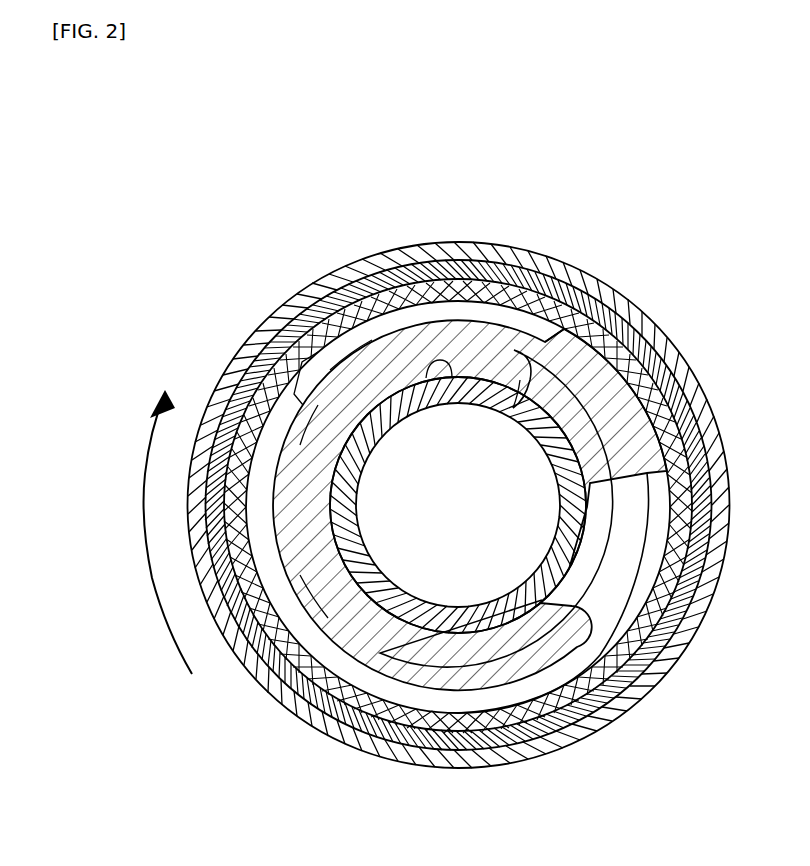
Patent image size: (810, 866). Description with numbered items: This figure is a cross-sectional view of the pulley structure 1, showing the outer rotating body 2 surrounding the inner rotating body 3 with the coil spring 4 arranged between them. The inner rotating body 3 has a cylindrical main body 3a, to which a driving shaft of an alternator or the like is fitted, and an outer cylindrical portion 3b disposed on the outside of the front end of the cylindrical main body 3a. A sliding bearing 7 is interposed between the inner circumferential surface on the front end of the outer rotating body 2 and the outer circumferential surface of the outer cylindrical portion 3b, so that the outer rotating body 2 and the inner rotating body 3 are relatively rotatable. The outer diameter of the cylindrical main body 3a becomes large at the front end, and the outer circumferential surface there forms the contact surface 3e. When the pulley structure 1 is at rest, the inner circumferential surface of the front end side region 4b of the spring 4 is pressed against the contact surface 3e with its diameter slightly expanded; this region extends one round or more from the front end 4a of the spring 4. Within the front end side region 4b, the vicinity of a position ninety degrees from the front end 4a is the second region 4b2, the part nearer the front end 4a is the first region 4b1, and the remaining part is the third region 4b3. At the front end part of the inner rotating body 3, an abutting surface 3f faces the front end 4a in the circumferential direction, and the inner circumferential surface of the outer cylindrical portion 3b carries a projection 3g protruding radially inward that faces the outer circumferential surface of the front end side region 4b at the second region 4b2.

The pulley structure 1 is at (639, 177).
The outer rotating body 2 is at (462, 242).
The inner rotating body 3 is at (646, 346).
The cylindrical main body 3a is at (406, 600).
The outer cylindrical portion 3b is at (362, 310).
The contact surface 3e is at (439, 370).
The abutting surface 3f is at (575, 310).
The projection 3g is at (248, 352).
The coil spring 4 is at (545, 642).
The front end 4a is at (514, 410).
The front end side region 4b is at (304, 692).
The first region 4b1 is at (367, 363).
The second region 4b2 is at (307, 430).
The third region 4b3 is at (262, 645).
The sliding bearing 7 is at (398, 284).